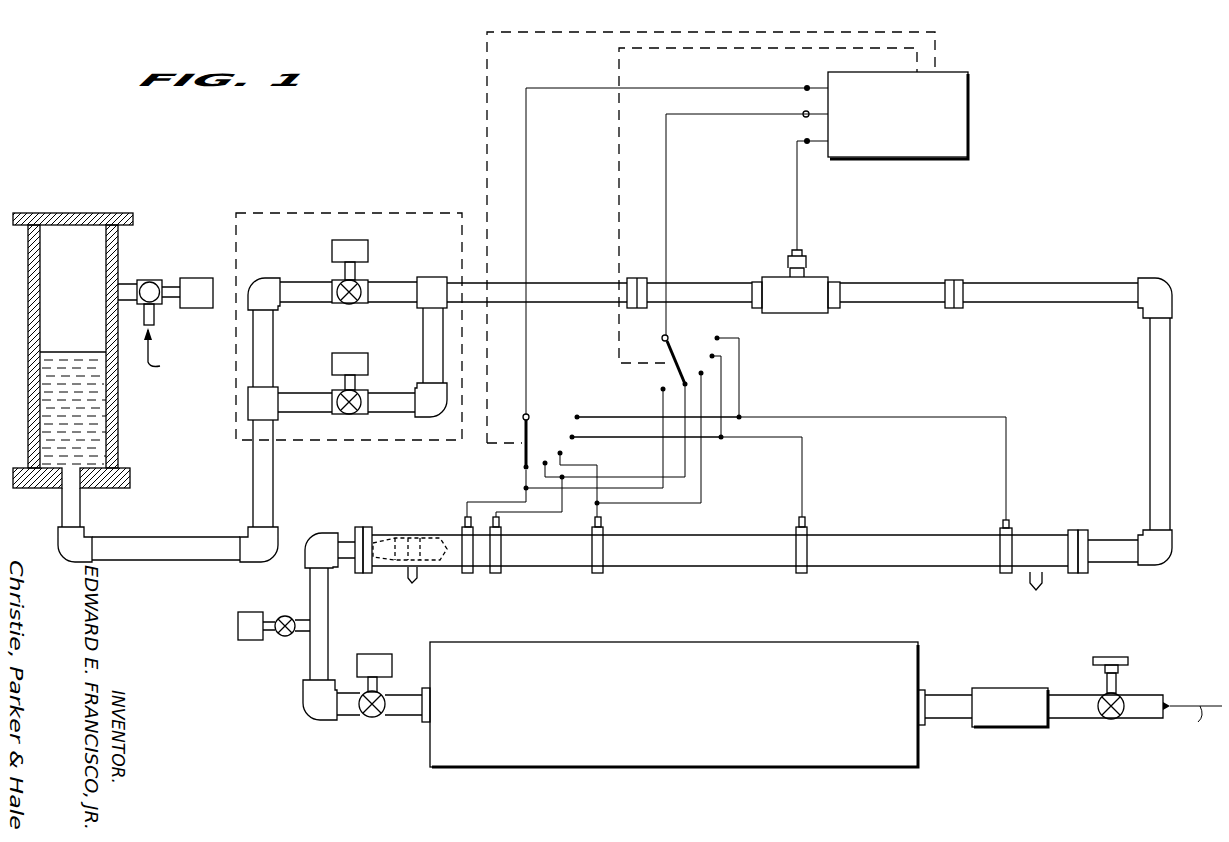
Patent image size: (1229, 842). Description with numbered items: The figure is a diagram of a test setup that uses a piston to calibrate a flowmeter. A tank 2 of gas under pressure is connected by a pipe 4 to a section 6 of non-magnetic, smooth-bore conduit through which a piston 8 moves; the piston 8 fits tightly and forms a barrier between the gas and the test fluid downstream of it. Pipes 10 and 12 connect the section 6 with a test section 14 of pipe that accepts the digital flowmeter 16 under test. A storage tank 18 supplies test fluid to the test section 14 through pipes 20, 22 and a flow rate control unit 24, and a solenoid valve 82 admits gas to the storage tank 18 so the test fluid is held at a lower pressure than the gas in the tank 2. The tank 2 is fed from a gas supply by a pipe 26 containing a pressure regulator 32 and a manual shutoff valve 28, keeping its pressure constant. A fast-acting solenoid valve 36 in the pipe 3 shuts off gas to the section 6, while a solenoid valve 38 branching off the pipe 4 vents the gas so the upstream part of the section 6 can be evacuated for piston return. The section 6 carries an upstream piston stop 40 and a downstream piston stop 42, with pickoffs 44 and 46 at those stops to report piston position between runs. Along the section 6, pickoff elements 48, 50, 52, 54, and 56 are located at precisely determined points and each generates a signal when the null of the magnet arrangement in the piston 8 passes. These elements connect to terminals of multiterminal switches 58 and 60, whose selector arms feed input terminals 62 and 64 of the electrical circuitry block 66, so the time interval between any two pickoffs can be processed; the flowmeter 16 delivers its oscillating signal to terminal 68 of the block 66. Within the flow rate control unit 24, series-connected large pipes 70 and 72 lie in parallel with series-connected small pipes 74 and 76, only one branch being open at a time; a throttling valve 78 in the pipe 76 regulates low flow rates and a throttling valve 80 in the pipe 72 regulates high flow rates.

The tank 2 is at (918, 655).
The pipe 3 is at (406, 718).
The pipe 4 is at (310, 580).
The section 6 is at (718, 531).
The piston 8 is at (425, 538).
The pipe 10 is at (1120, 540).
The pipe 12 is at (1170, 372).
The test section 14 is at (1057, 273).
The digital flowmeter 16 is at (815, 277).
The storage tank 18 is at (118, 402).
The pipe 20 is at (150, 537).
The pipe 22 is at (276, 462).
The flow rate control unit 24 is at (330, 213).
The pipe 26 is at (1150, 695).
The manual shutoff valve 28 is at (1115, 720).
The pressure regulator 32 is at (1042, 688).
The solenoid valve 36 is at (370, 718).
The solenoid valve 38 is at (288, 637).
The upstream piston stop 40 is at (376, 527).
The downstream piston stop 42 is at (1052, 550).
The pickoff 44 is at (410, 584).
The pickoff 46 is at (1032, 588).
The pickoff element 48 is at (468, 575).
The pickoff element 50 is at (497, 575).
The pickoff element 52 is at (598, 575).
The pickoff element 54 is at (800, 575).
The pickoff element 56 is at (1000, 530).
The multiterminal switch 58 is at (560, 418).
The multiterminal switch 60 is at (708, 331).
The input terminal 62 is at (805, 86).
The input terminal 64 is at (803, 117).
The block 66 is at (968, 125).
The terminal 68 is at (797, 150).
The large pipe 70 is at (278, 342).
The large pipe 72 is at (302, 282).
The small pipe 74 is at (423, 335).
The small pipe 76 is at (388, 393).
The throttling valve 78 is at (338, 392).
The throttling valve 80 is at (370, 282).
The solenoid valve 82 is at (152, 280).